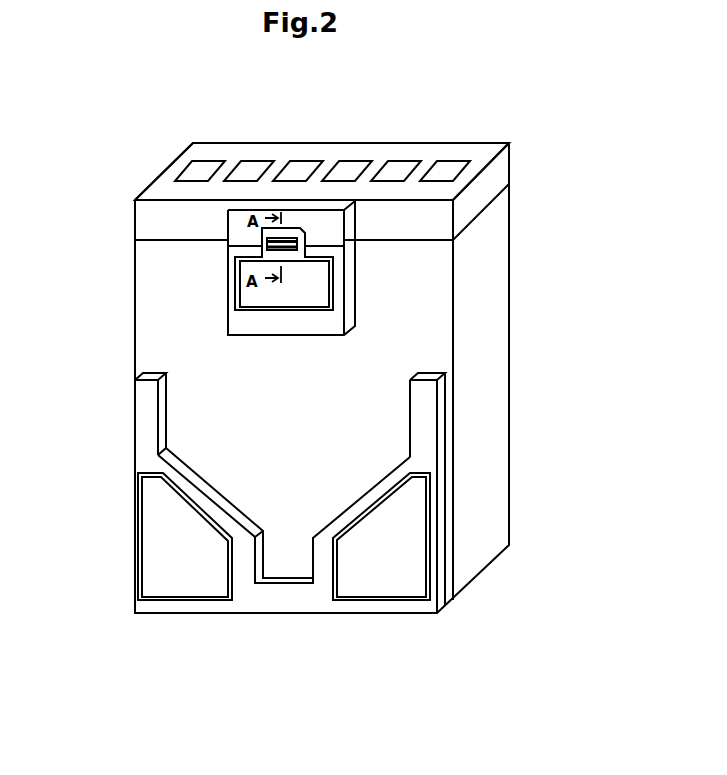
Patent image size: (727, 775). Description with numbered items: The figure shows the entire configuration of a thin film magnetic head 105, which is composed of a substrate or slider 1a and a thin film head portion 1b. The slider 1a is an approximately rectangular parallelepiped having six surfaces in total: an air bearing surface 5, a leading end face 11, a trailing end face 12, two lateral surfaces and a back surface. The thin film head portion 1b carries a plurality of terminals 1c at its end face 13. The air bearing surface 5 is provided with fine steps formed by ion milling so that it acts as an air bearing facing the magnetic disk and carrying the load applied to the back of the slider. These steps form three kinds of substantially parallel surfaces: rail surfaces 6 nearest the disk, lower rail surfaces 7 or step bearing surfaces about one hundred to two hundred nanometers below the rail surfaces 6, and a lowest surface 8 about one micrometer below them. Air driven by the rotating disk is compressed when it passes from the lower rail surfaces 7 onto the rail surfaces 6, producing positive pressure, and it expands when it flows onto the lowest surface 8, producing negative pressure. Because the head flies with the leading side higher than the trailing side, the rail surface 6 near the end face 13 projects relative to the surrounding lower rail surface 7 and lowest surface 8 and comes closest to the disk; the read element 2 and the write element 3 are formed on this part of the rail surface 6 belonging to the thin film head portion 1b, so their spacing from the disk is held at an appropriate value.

The thin film magnetic head 105 is at (500, 96).
The substrate (slider) 1a is at (487, 238).
The thin film head portion 1b is at (485, 187).
The terminals 1c is at (297, 168).
The read element 2 is at (300, 228).
The write element 3 is at (262, 238).
The air bearing surface 5 is at (167, 96).
The rail surfaces 6 is at (240, 291).
The lower rail surfaces 7 is at (242, 320).
The lowest surface 8 is at (157, 345).
The leading end face 11 is at (256, 608).
The trailing end face 12 is at (460, 236).
The end face 13 is at (185, 166).